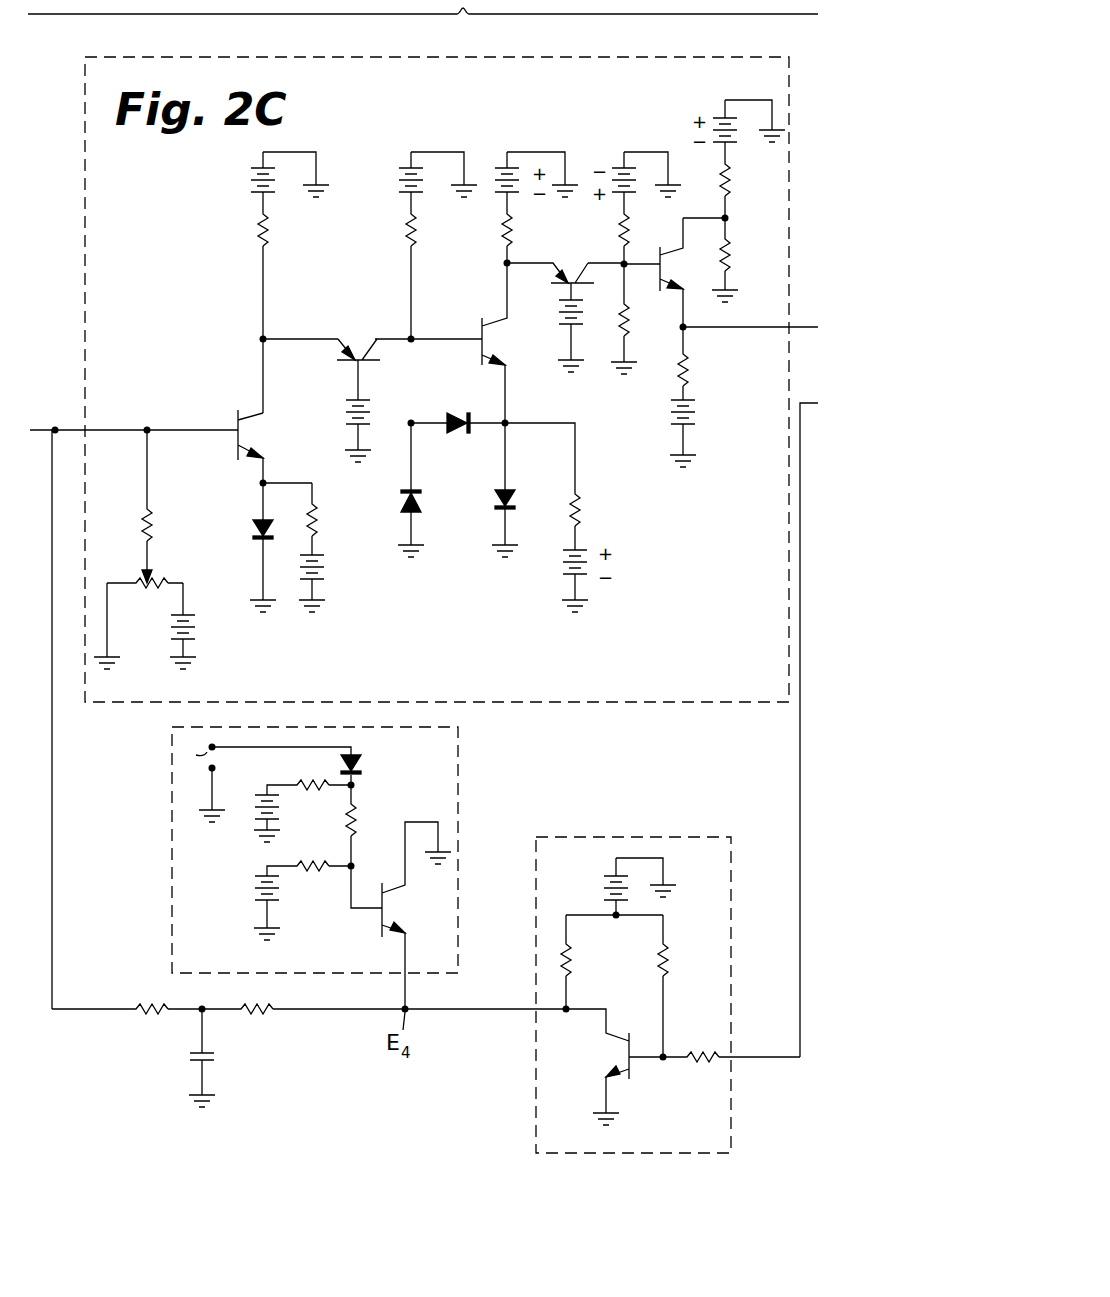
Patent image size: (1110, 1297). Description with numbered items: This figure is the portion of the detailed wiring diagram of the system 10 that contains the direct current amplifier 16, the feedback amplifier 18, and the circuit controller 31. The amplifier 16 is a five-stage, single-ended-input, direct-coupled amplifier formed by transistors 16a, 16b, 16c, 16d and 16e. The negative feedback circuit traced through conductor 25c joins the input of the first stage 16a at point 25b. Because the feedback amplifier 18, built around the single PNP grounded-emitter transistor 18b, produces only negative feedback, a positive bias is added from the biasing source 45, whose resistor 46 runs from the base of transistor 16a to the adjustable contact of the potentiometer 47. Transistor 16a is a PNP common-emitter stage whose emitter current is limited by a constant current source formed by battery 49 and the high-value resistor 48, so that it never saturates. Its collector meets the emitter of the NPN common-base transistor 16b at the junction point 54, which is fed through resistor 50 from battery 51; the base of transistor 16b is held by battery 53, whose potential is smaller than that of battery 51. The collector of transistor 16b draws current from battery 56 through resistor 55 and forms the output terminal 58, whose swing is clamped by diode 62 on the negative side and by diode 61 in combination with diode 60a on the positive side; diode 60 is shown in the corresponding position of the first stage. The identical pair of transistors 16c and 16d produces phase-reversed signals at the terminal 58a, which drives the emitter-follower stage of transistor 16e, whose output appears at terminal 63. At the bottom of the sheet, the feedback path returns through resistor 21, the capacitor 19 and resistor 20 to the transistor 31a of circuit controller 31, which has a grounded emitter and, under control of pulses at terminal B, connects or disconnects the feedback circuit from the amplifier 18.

The control system 10 is at (423, 32).
The direct current amplifier 16 is at (86, 142).
The transistor 16a is at (235, 427).
The transistor 16b is at (356, 352).
The transistor 16c is at (478, 331).
The transistor 16d is at (573, 278).
The transistor 16e is at (664, 264).
The direct current feedback amplifier 18 is at (731, 972).
The transistor 18b is at (629, 1057).
The capacitor 19 is at (190, 1058).
The resistor 20 is at (257, 1013).
The resistor 21 is at (150, 1013).
The point 25b is at (55, 428).
The conductor 25c is at (54, 780).
The circuit controller 31 is at (172, 834).
The transistor 31a is at (372, 925).
The biasing source 45 is at (154, 644).
The resistor 46 is at (143, 528).
The potentiometer 47 is at (138, 585).
The resistor 48 is at (320, 526).
The battery 49 is at (342, 570).
The resistor 50 is at (257, 234).
The battery 51 is at (250, 193).
The battery 53 is at (362, 418).
The junction point 54 is at (263, 339).
The resistor 55 is at (404, 233).
The battery 56 is at (397, 179).
The output terminal 58 is at (411, 339).
The output terminal 58a is at (627, 262).
The diode 60 is at (254, 531).
The diode 60a is at (497, 496).
The diode 61 is at (451, 417).
The diode 62 is at (420, 492).
The terminal 63 is at (683, 327).